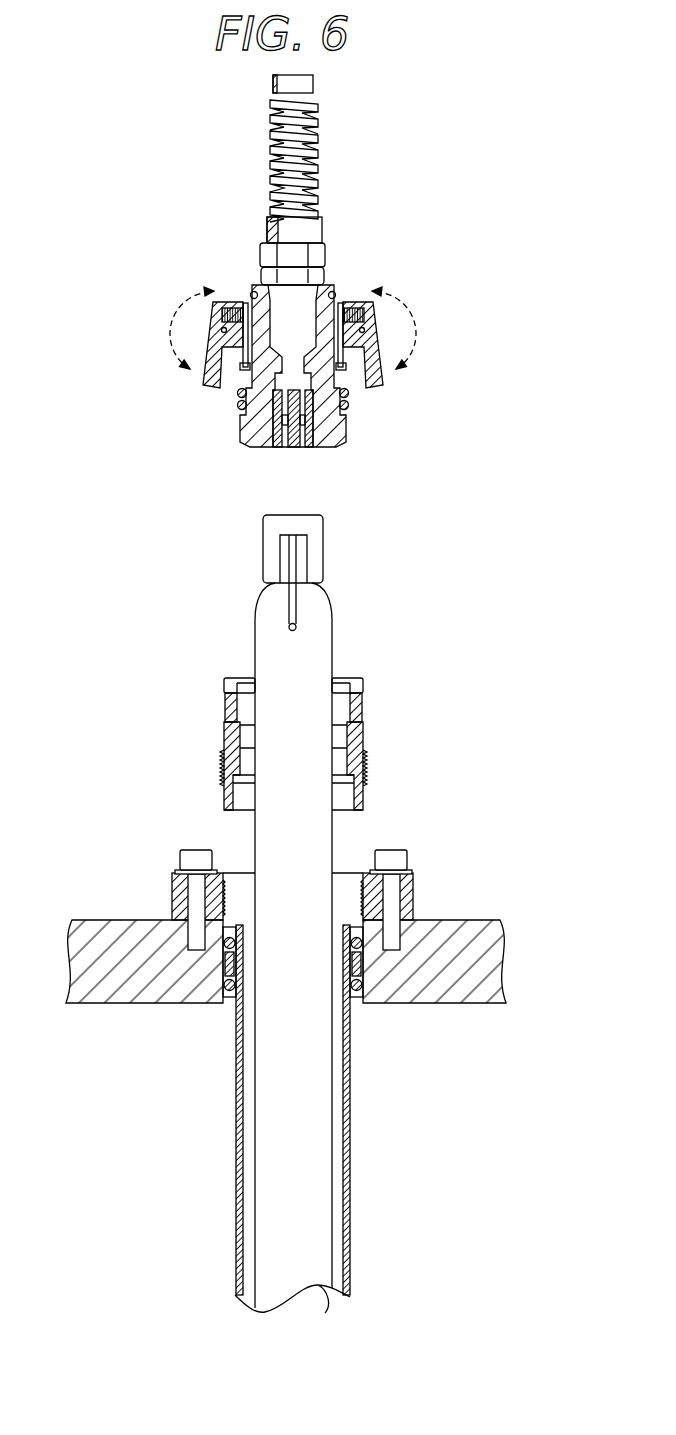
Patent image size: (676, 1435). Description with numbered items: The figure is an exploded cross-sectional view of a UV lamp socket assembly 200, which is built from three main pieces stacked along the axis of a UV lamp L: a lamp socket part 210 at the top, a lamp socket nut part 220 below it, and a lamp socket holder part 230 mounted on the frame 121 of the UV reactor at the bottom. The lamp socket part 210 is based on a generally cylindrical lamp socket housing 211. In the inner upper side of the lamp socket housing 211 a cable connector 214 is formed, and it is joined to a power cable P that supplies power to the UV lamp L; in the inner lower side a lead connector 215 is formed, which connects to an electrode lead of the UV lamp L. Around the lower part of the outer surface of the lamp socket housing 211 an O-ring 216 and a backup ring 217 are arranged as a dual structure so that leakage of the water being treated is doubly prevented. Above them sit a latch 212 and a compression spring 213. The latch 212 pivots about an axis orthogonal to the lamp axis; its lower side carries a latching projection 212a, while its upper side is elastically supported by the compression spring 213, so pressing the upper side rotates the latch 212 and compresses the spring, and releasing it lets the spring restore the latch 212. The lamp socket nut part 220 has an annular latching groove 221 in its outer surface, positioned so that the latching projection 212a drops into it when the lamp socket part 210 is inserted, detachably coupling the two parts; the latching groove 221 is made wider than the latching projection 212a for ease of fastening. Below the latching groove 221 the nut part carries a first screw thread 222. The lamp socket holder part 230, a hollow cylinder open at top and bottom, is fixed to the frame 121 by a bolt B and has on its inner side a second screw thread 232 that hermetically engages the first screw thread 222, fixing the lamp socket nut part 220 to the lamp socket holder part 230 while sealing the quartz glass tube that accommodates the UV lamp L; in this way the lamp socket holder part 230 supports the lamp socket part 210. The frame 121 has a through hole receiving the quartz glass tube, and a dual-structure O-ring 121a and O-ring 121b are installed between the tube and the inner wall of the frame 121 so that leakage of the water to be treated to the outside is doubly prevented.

The UV lamp socket assembly 200 is at (192, 138).
The power cable P is at (283, 182).
The cable connector 214 is at (270, 277).
The lamp socket part 210 is at (187, 377).
The lamp socket housing 211 is at (345, 430).
The latch 212 is at (387, 373).
The latching projection 212a is at (370, 390).
The compression spring 213 is at (345, 305).
The lead connector 215 is at (302, 437).
The O-ring 216 is at (238, 408).
The backup ring 217 is at (240, 395).
The UV lamp L is at (275, 631).
The lamp socket nut part 220 is at (366, 697).
The latching groove 221 is at (227, 718).
The first screw thread 222 is at (363, 757).
The lamp socket holder part 230 is at (170, 888).
The second screw thread 232 is at (358, 894).
The bolt B is at (393, 860).
The frame 121 is at (482, 958).
The O-ring 121a is at (357, 992).
The O-ring 121b is at (363, 947).